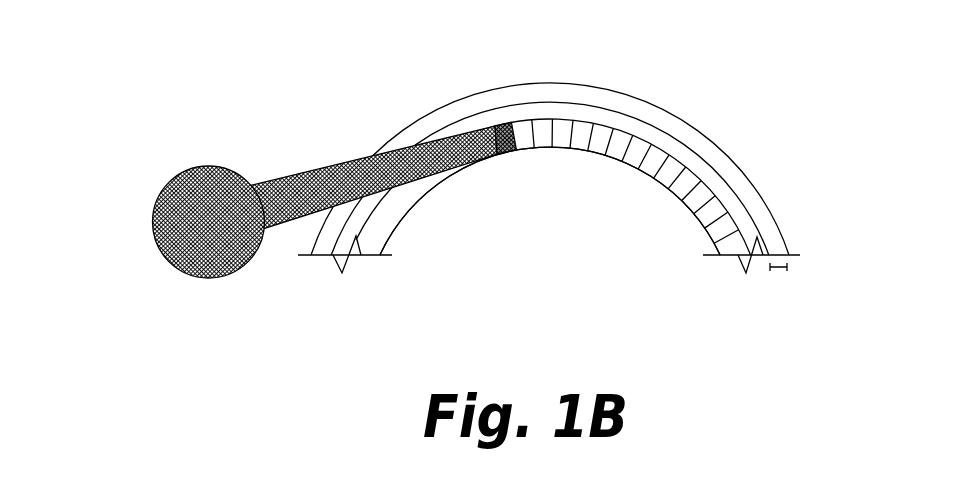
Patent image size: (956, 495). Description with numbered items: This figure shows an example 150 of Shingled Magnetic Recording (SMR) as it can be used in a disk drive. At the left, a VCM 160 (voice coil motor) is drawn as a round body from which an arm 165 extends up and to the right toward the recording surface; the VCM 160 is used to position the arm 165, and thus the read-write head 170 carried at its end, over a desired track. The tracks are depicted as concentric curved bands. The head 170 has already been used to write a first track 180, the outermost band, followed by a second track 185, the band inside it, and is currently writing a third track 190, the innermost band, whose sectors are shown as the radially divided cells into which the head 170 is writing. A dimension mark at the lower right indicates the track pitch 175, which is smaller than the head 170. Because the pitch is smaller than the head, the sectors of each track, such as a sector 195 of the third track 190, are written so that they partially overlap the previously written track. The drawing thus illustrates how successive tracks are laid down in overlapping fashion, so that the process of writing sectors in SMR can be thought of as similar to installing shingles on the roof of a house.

The example of Shingled Magnetic Recording 150 is at (176, 91).
The VCM 160 is at (208, 278).
The arm 165 is at (338, 165).
The read-write head 170 is at (508, 155).
The track pitch 175 is at (778, 270).
The first track 180 is at (517, 92).
The second track 185 is at (682, 155).
The third track 190 is at (397, 202).
The sector 195 is at (677, 200).